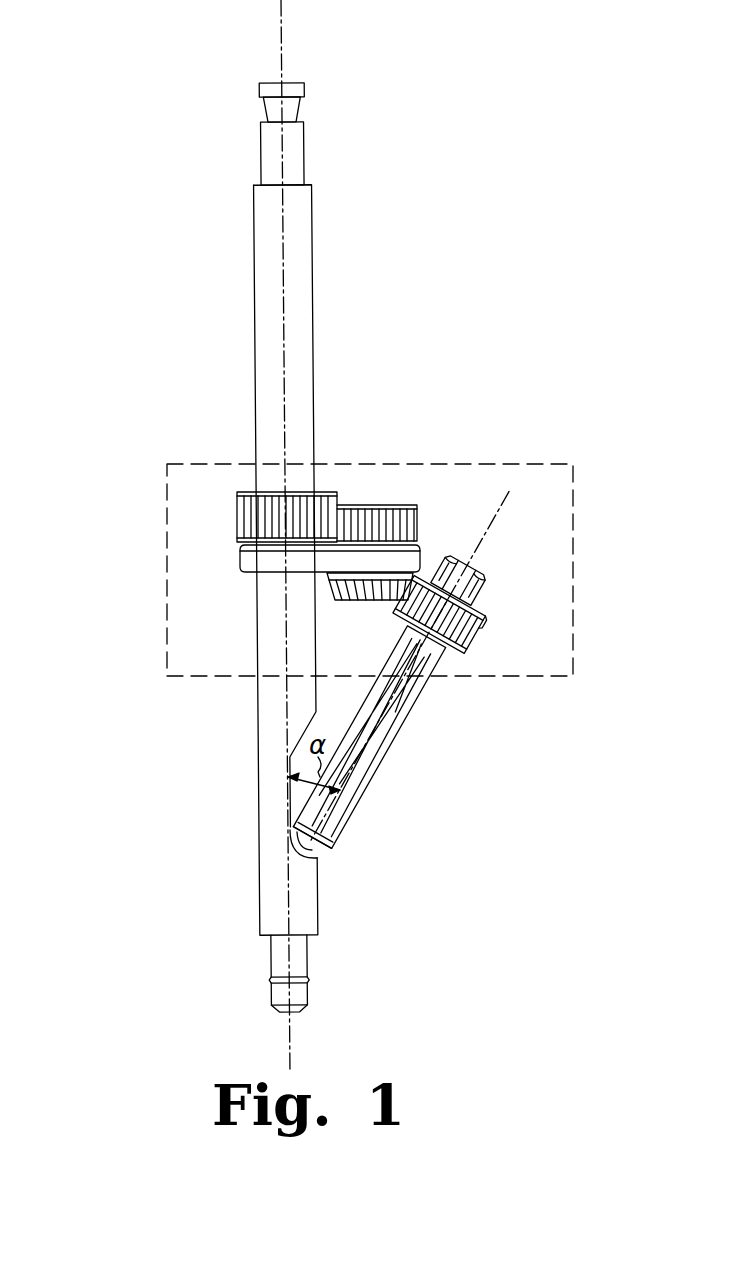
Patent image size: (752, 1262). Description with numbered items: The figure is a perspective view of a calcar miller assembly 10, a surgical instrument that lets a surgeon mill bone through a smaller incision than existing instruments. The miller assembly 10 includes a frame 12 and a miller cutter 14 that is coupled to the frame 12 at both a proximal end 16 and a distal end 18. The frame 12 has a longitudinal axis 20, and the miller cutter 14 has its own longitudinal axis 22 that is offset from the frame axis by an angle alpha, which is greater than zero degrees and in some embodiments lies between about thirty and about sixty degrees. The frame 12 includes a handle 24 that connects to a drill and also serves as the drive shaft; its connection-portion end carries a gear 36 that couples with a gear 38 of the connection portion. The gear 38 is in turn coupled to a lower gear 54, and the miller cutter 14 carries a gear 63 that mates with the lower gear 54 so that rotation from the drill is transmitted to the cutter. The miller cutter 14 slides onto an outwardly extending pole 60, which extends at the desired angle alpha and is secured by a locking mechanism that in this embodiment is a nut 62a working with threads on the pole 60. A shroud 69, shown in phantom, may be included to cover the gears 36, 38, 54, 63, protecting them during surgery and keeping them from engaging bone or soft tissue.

The calcar miller assembly 10 is at (390, 266).
The frame 12 is at (158, 416).
The miller cutter 14 is at (383, 750).
The proximal end 16 is at (478, 642).
The distal end 18 is at (338, 847).
The longitudinal axis 20 is at (283, 46).
The longitudinal axis 22 is at (500, 525).
The handle 24 is at (315, 375).
The gear 36 is at (237, 512).
The gear 38 is at (418, 522).
The lower gear 54 is at (364, 601).
The outwardly extending pole 60 is at (320, 859).
The nut 62a is at (480, 580).
The gear 63 is at (484, 621).
The shroud 69 is at (167, 540).